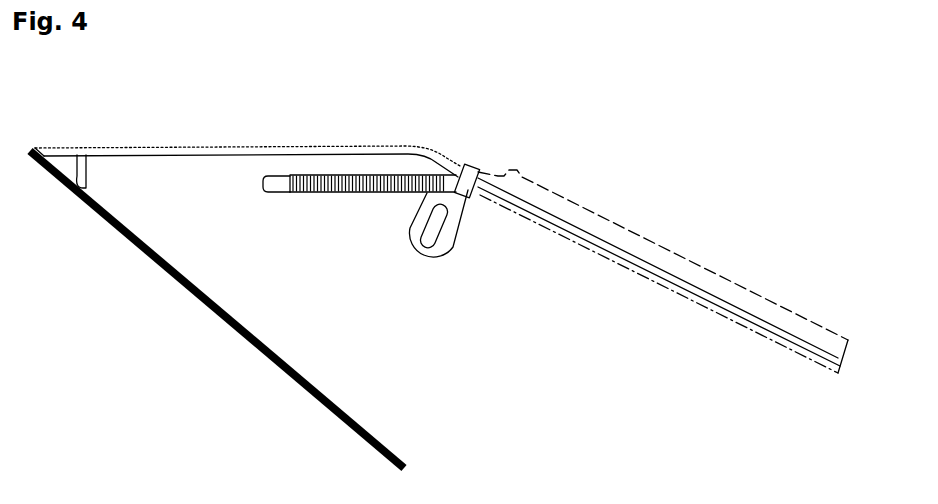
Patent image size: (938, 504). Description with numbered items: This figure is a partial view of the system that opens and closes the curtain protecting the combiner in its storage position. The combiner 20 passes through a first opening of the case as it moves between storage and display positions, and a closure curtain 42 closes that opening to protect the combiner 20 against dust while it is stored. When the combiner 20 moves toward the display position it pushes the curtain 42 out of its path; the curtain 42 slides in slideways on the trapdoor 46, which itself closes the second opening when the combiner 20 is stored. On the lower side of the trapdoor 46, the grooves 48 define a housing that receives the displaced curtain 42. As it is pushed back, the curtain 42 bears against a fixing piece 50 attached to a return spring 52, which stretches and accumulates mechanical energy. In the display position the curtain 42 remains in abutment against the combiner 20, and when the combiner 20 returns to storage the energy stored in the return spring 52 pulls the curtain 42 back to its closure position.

The combiner 20 is at (257, 349).
The closure curtain 42 is at (138, 147).
The trapdoor 46 is at (722, 277).
The grooves 48 is at (607, 246).
The fixing piece 50 is at (465, 178).
The return spring 52 is at (315, 193).